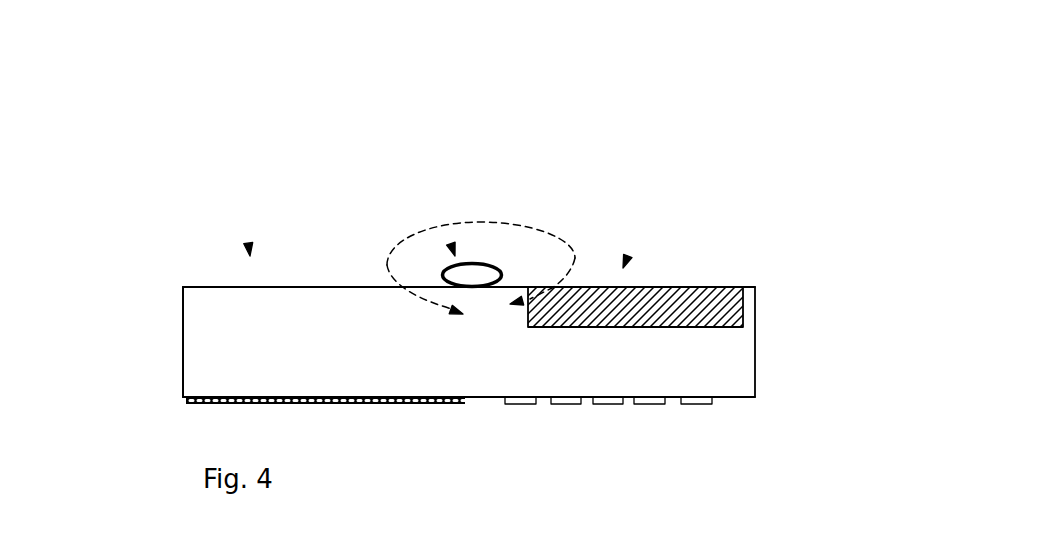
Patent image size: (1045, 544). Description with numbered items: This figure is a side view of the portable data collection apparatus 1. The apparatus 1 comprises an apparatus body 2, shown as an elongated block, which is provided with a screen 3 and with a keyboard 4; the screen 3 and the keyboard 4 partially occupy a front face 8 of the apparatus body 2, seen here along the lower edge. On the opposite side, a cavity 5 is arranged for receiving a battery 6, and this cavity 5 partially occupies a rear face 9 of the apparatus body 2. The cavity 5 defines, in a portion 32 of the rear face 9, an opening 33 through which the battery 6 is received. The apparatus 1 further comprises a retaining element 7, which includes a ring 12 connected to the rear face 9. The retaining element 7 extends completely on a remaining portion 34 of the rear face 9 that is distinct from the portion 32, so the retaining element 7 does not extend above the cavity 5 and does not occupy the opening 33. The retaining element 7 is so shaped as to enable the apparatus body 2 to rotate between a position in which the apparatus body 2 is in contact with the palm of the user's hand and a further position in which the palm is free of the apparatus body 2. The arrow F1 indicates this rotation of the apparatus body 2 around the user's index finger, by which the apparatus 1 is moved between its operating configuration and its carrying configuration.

The portable data collection apparatus 1 is at (247, 245).
The apparatus body 2 is at (183, 339).
The screen 3 is at (410, 404).
The keyboard 4 is at (615, 404).
The cavity 5 is at (740, 310).
The battery 6 is at (673, 293).
The retaining element 7 is at (449, 247).
The front face 8 is at (492, 397).
The rear face 9 is at (333, 287).
The ring 12 is at (473, 263).
The portion 32 is at (643, 287).
The opening 33 is at (627, 258).
The remaining portion 34 is at (513, 287).
The arrow F1 is at (560, 233).